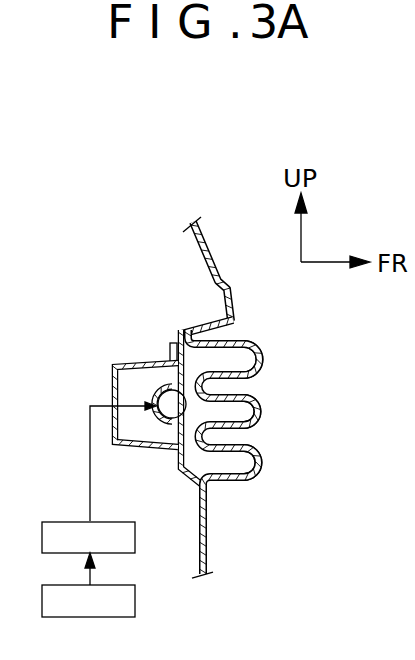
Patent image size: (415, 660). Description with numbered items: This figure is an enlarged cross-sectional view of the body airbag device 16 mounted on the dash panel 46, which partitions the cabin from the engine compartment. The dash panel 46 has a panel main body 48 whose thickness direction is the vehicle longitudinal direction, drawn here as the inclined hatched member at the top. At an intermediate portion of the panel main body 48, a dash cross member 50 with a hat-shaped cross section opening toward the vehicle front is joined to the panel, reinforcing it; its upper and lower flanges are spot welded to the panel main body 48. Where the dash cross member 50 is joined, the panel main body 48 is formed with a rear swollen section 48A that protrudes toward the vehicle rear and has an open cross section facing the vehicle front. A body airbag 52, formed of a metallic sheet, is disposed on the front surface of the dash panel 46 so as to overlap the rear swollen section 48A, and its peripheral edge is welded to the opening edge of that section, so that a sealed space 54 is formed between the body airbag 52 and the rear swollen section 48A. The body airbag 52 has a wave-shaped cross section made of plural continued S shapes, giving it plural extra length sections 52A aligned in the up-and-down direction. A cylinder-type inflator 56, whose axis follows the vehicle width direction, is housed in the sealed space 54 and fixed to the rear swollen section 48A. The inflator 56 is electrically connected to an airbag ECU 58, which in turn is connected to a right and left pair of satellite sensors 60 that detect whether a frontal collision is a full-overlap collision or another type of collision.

The body airbag device 16 is at (229, 397).
The dash panel 46 is at (126, 398).
The panel main body 48 is at (210, 245).
The rear swollen section 48A is at (190, 328).
The dash cross member 50 is at (112, 386).
The body airbag 52 is at (266, 402).
The extra length sections 52A is at (258, 356).
The sealed space 54 is at (240, 463).
The inflator 56 is at (171, 424).
The airbag ECU 58 is at (137, 538).
The satellite sensors 60 is at (137, 601).